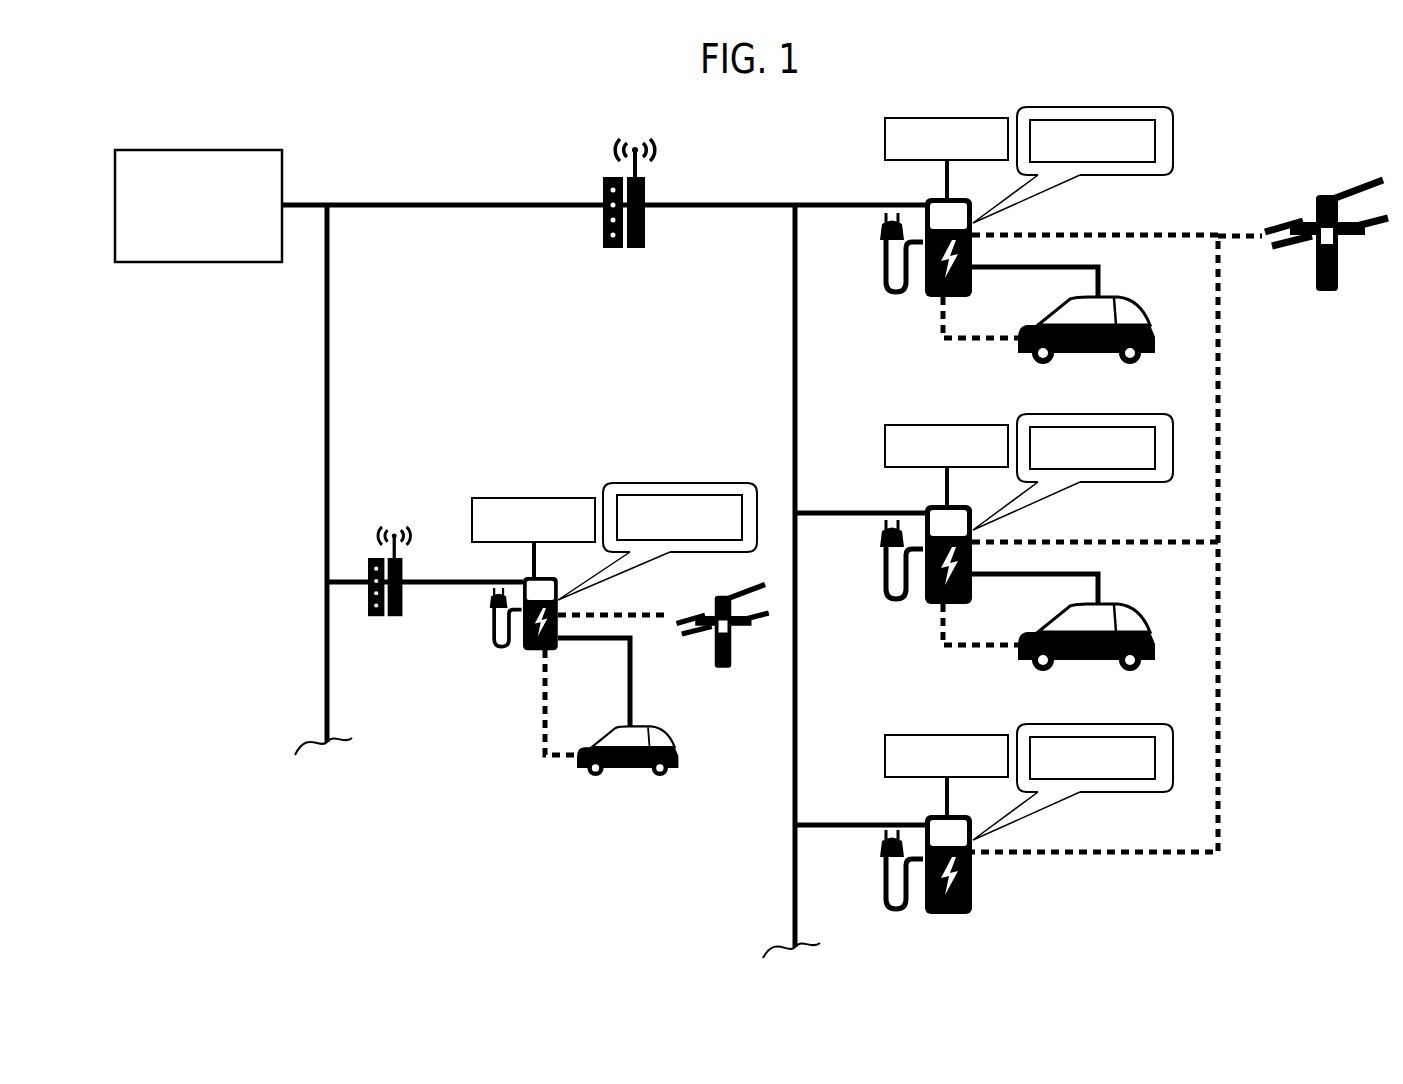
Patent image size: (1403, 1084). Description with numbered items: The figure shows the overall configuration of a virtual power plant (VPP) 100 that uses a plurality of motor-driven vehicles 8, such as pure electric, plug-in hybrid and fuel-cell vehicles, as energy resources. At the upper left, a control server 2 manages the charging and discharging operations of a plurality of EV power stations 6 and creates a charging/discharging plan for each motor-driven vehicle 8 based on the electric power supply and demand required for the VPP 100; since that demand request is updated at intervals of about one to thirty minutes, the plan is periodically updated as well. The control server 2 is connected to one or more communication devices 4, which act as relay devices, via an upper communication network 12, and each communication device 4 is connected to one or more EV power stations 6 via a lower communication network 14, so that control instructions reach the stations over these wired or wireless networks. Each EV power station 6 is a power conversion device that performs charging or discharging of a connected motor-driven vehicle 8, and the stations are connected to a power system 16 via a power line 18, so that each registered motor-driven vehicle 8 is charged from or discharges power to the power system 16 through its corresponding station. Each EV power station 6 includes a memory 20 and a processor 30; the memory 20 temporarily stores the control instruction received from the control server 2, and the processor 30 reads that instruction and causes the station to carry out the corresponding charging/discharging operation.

The control server 2 is at (200, 150).
The communication device 4 is at (605, 177).
The EV power station 6 is at (925, 198).
The motor-driven vehicle 8 is at (1128, 297).
The upper communication network 12 is at (455, 208).
The lower communication network 14 is at (795, 370).
The power system 16 is at (1350, 195).
The power line 18 is at (1222, 470).
The memory 20 is at (948, 118).
The processor 30 is at (1128, 110).
The virtual power plant 100 is at (425, 137).